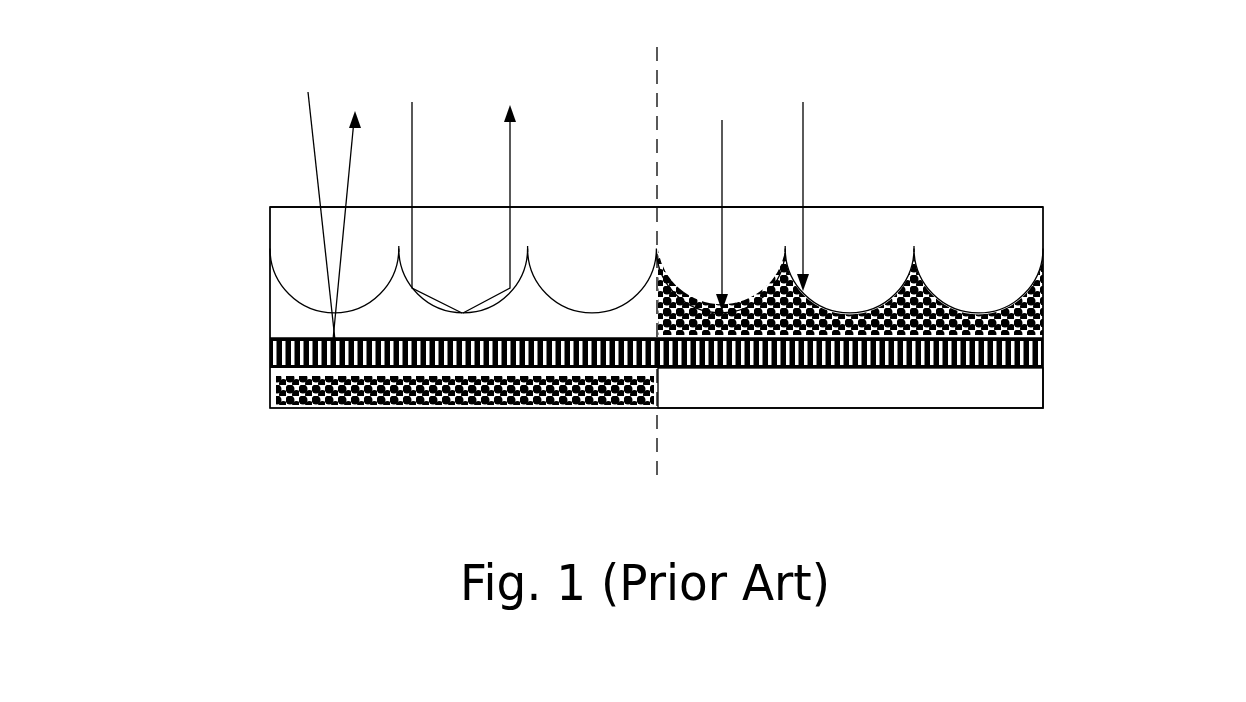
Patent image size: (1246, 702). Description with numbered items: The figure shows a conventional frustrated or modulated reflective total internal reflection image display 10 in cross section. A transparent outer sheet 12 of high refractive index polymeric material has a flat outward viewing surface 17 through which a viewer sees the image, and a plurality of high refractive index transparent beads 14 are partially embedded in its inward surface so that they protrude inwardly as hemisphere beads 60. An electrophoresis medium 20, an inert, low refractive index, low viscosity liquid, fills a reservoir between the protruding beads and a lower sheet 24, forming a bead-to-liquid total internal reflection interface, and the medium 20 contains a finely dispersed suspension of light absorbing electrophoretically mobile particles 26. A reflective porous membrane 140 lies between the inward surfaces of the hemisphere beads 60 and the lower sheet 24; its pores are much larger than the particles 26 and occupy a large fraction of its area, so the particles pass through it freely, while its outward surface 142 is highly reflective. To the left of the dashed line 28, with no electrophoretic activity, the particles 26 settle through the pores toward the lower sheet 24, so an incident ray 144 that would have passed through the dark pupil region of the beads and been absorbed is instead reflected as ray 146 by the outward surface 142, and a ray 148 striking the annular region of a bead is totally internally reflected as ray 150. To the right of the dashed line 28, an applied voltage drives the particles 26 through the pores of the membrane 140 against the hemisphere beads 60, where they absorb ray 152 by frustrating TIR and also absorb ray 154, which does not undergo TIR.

The display 10 is at (986, 176).
The transparent outer sheet 12 is at (270, 234).
The beads 14 is at (1143, 205).
The flat outward viewing surface 17 is at (907, 207).
The electrophoresis medium 20 is at (288, 308).
The lower sheet 24 is at (840, 409).
The electrophoretically mobile particles 26 is at (372, 410).
The dashed line 28 is at (657, 85).
The hemisphere beads 60 is at (285, 291).
The reflective porous membrane 140 is at (255, 355).
The outward surface 142 is at (283, 340).
The incident light ray 144 is at (316, 163).
The reflected light ray 146 is at (353, 137).
The incident light ray 148 is at (412, 176).
The totally internally reflected ray 150 is at (510, 193).
The light ray 152 is at (803, 158).
The light ray 154 is at (722, 140).